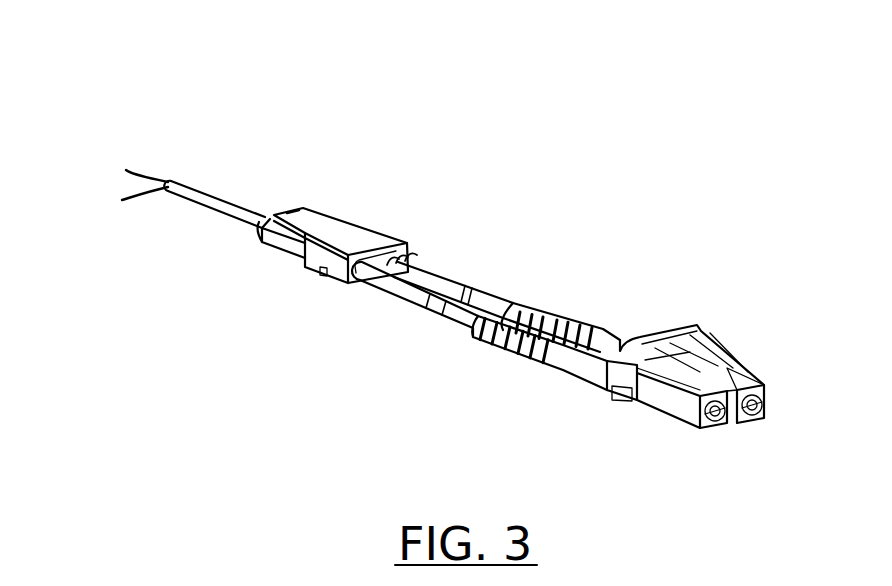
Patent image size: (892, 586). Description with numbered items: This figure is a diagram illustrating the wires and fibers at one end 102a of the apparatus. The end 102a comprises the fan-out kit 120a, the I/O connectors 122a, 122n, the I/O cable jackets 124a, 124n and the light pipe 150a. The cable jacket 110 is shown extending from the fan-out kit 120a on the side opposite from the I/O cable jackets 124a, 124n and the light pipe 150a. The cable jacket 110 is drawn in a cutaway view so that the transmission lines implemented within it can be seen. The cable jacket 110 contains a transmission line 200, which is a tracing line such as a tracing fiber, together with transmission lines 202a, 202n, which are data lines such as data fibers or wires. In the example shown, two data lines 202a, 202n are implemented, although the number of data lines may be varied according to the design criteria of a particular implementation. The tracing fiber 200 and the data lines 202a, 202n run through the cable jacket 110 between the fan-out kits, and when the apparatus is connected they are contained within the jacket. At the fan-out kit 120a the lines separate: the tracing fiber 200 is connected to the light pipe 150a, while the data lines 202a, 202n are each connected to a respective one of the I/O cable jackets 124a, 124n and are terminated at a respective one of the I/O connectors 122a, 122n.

The end 102a is at (391, 40).
The cable jacket 110 is at (233, 215).
The transmission line 200 is at (169, 182).
The transmission line 202n is at (126, 170).
The transmission line 202a is at (122, 200).
The fan-out kit 120a is at (362, 202).
The light pipe 150a is at (417, 258).
The I/O cable jacket 124n is at (505, 300).
The I/O cable jacket 124a is at (467, 324).
The I/O connector 122a is at (683, 427).
The I/O connector 122n is at (755, 420).